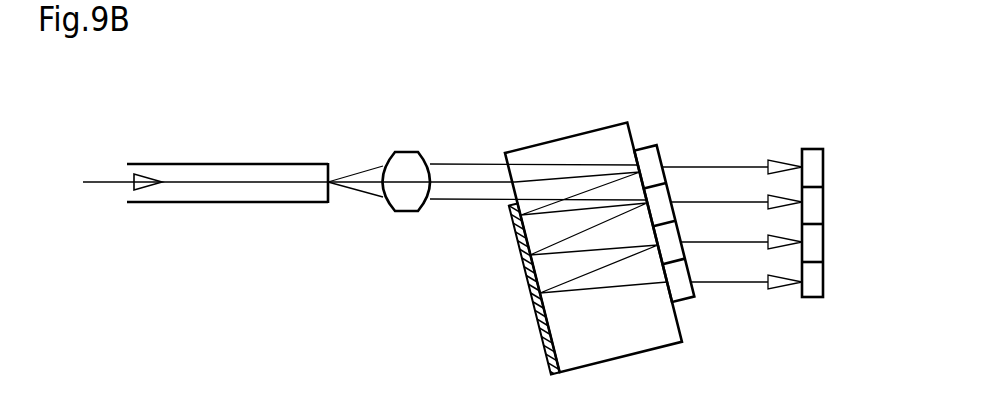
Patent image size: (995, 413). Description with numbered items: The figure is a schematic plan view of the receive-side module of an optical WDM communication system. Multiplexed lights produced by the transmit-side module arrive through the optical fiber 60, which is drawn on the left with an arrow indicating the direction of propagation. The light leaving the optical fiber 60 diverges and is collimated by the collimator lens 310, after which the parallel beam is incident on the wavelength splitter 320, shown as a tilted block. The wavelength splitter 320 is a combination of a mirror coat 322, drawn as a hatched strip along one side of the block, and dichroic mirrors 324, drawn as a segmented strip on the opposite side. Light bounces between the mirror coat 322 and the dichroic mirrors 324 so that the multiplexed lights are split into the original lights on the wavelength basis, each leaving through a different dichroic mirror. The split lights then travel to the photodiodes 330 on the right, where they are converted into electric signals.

The optical fiber 60 is at (171, 164).
The collimator lens 310 is at (413, 152).
The wavelength splitter 320 is at (577, 135).
The mirror coat 322 is at (537, 312).
The dichroic mirrors 324 is at (663, 156).
The photodiodes 330 is at (823, 162).